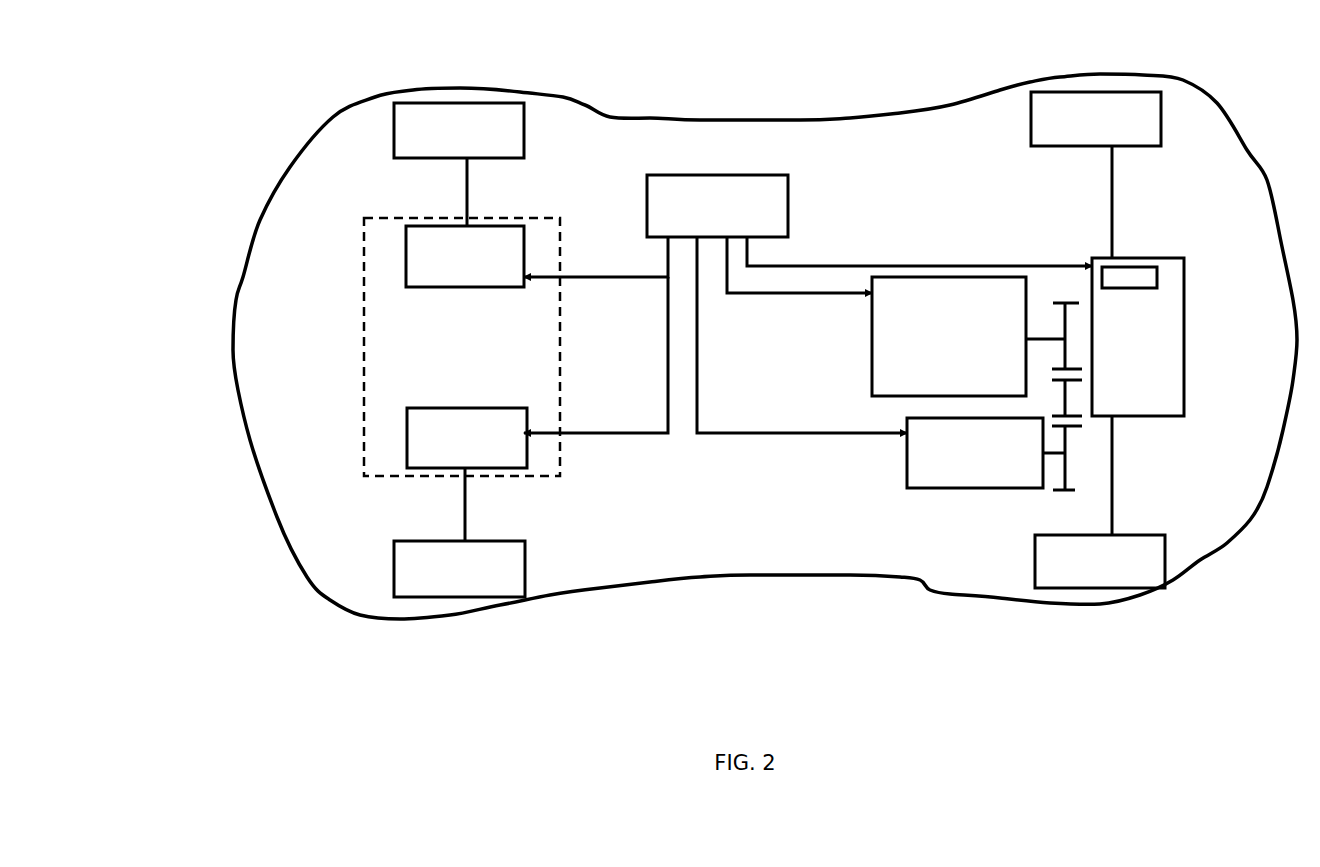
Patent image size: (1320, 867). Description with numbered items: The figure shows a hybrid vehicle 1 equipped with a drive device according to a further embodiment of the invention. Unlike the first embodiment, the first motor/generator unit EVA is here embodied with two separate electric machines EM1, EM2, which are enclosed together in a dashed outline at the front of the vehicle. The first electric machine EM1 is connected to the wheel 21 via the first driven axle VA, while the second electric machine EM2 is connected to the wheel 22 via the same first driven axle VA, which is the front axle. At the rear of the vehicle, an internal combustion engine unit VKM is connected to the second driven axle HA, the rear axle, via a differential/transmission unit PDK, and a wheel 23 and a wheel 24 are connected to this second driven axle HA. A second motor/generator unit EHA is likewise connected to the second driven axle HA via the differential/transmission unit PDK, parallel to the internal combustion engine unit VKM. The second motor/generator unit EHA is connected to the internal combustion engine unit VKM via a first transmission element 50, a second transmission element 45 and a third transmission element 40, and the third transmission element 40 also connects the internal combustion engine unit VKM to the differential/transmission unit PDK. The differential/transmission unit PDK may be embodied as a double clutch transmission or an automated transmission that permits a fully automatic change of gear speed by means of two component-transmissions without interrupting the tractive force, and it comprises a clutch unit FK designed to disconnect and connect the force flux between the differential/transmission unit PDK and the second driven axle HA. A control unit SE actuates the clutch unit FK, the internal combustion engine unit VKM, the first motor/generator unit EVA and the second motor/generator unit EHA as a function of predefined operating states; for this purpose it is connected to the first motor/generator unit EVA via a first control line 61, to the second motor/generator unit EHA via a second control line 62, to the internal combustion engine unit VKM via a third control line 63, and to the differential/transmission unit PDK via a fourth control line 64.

The hybrid vehicle 1 is at (290, 167).
The wheel 21 is at (438, 103).
The wheel 22 is at (500, 597).
The wheel 23 is at (1045, 588).
The wheel 24 is at (1097, 92).
The third transmission element 40 is at (1060, 303).
The second transmission element 45 is at (1068, 397).
The first transmission element 50 is at (1077, 490).
The first control line 61 is at (568, 277).
The second control line 62 is at (693, 407).
The third control line 63 is at (727, 300).
The fourth control line 64 is at (925, 267).
The first driven axle VA is at (467, 172).
The second driven axle HA is at (1112, 190).
The first motor/generator unit EVA is at (364, 345).
The first electric machine EM1 is at (508, 287).
The second electric machine EM2 is at (418, 408).
The control unit SE is at (788, 190).
The internal combustion engine unit VKM is at (872, 350).
The second motor/generator unit EHA is at (907, 465).
The differential/transmission unit PDK is at (1184, 330).
The clutch unit FK is at (1157, 280).